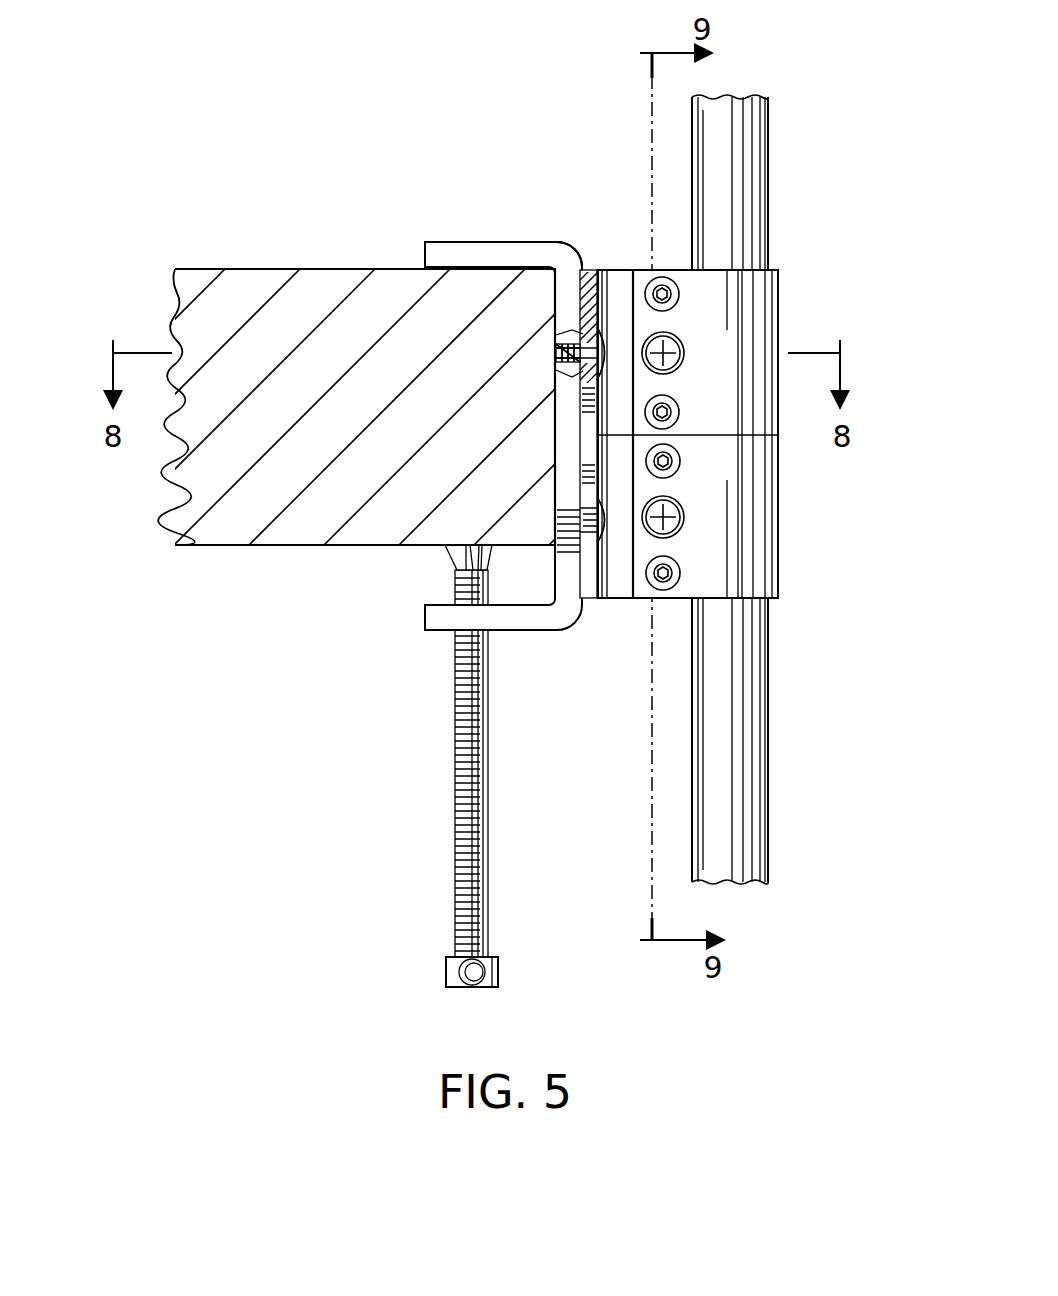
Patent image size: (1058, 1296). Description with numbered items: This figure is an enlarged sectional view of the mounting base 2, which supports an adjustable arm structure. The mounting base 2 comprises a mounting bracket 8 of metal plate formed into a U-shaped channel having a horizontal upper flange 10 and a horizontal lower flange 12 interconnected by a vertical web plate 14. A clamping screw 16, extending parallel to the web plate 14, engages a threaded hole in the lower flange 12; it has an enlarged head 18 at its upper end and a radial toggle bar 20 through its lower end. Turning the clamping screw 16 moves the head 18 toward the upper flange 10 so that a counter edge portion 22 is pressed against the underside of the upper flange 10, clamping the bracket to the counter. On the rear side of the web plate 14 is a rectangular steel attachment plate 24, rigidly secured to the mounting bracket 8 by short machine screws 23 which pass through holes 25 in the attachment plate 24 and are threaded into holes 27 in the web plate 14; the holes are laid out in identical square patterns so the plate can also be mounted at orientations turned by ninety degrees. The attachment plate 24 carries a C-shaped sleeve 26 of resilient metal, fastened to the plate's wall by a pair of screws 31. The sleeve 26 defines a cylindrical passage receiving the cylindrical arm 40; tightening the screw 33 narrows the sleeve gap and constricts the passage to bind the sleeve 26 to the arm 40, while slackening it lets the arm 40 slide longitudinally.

The mounting base 2 is at (594, 110).
The mounting bracket 8 is at (562, 242).
The upper flange 10 is at (482, 241).
The lower flange 12 is at (430, 617).
The vertical web plate 14 is at (576, 420).
The clamping screw 16 is at (455, 770).
The enlarged head 18 is at (452, 556).
The radial toggle bar 20 is at (452, 978).
The counter edge portion 22 is at (303, 270).
The machine screw 23 is at (603, 335).
The attachment plate 24 is at (592, 270).
The hole 25 is at (583, 335).
The sleeve 26 is at (755, 308).
The threaded hole 27 is at (553, 358).
The screw 31 is at (679, 290).
The clamping screw 33 is at (678, 345).
The cylindrical arm 40 is at (718, 160).